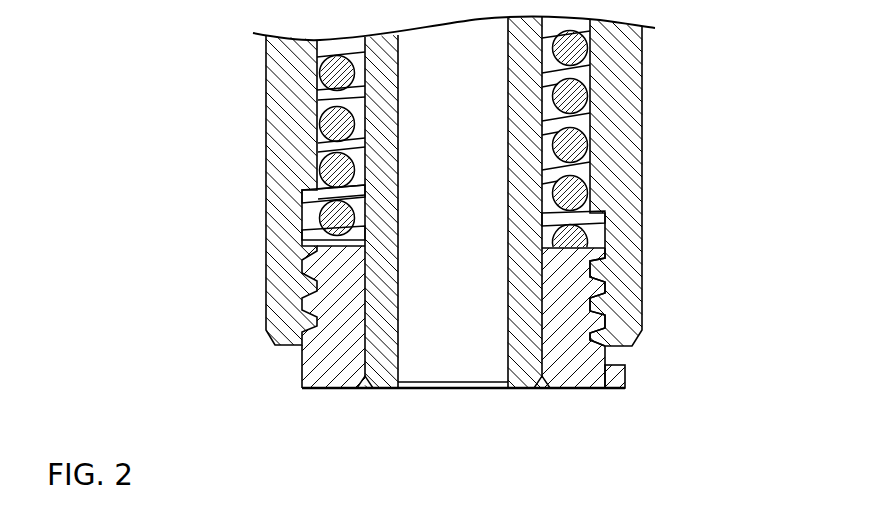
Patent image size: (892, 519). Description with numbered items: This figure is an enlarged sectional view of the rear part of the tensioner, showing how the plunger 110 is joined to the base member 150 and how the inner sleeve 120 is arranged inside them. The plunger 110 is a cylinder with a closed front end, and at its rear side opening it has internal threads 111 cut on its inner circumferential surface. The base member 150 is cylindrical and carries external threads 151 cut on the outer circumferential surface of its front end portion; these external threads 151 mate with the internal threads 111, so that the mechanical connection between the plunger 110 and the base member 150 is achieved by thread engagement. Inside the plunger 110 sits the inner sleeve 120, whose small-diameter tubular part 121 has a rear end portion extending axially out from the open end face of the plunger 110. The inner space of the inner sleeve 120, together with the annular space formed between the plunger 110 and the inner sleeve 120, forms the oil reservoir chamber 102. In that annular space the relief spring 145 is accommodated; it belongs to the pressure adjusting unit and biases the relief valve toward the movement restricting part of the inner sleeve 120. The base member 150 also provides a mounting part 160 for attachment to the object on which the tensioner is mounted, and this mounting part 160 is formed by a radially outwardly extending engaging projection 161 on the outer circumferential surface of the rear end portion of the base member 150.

The oil reservoir chamber 102 is at (488, 92).
The plunger 110 is at (262, 184).
The internal threads 111 is at (302, 236).
The inner sleeve 120 is at (357, 113).
The small-diameter tubular part 121 is at (386, 383).
The relief spring 145 is at (583, 146).
The base member 150 is at (296, 373).
The external threads 151 is at (603, 283).
The mounting part 160 is at (633, 381).
The engaging projection 161 is at (620, 389).